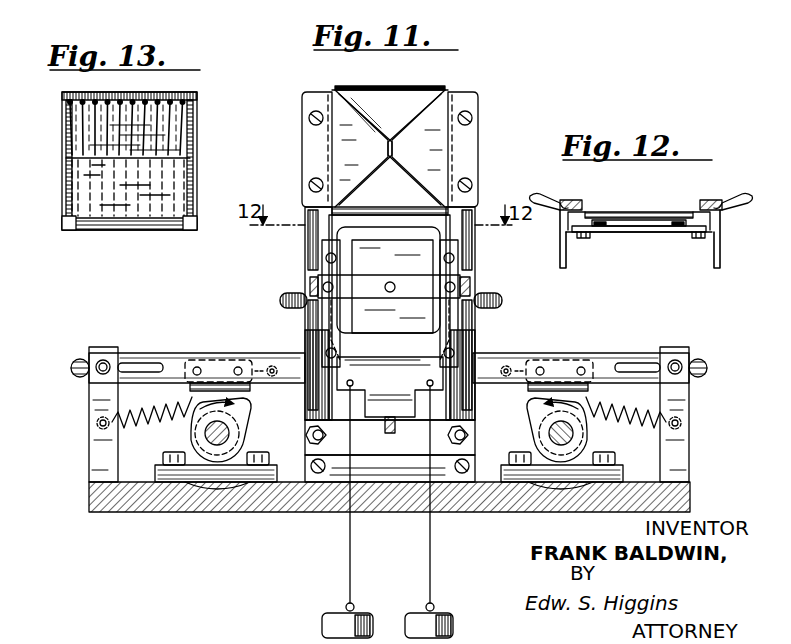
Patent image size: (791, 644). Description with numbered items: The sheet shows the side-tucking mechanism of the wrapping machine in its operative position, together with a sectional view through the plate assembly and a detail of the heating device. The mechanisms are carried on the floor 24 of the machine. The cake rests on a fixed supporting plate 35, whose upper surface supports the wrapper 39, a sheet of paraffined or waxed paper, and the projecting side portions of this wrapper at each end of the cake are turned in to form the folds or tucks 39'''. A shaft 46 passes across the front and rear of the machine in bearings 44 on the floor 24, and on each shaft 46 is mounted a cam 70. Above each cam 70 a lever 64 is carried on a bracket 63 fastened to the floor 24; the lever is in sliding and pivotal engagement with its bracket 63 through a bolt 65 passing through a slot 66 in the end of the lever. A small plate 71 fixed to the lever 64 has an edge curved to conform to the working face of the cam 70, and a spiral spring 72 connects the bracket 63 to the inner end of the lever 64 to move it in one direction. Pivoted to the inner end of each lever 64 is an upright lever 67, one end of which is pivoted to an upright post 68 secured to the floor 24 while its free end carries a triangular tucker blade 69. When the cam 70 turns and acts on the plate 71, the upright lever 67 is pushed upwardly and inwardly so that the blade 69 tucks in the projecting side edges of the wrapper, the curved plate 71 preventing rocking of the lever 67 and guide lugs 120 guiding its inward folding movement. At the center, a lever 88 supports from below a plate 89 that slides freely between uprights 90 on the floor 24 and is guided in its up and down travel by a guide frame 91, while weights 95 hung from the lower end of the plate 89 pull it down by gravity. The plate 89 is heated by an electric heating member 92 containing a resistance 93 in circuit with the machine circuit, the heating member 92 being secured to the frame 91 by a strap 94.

In FIG. 11, the floor 24 is at (298, 512).
In FIG. 11, the fixed supporting plate 35 is at (388, 212).
In FIG. 11, the wrapper 39 is at (365, 134).
In FIG. 11, the folds or tucks 39''' is at (379, 111).
In FIG. 11, the bearings 44 is at (220, 478).
In FIG. 11, the shaft 46 is at (229, 433).
In FIG. 11, the bracket 63 is at (98, 455).
In FIG. 11, the lever 64 is at (176, 362).
In FIG. 11, the bolt 65 is at (101, 361).
In FIG. 11, the slot 66 is at (72, 370).
In FIG. 12, the upright lever 67 is at (570, 205).
In FIG. 11, the upright lever 67 is at (308, 238).
In FIG. 11, the upright post 68 is at (330, 435).
In FIG. 11, the tucker blade 69 is at (314, 147).
In FIG. 11, the cam 70 is at (196, 412).
In FIG. 11, the small plate 71 is at (243, 392).
In FIG. 11, the spiral spring 72 is at (128, 421).
In FIG. 11, the lever 88 is at (394, 430).
In FIG. 12, the plate 89 is at (633, 210).
In FIG. 11, the plate 89 is at (390, 387).
In FIG. 11, the uprights 90 is at (312, 337).
In FIG. 11, the guide frame 91 is at (327, 326).
In FIG. 13, the electric heating member 92 is at (70, 190).
In FIG. 12, the electric heating member 92 is at (655, 225).
In FIG. 11, the electric heating member 92 is at (430, 268).
In FIG. 13, the resistance 93 is at (70, 133).
In FIG. 12, the strap 94 is at (619, 232).
In FIG. 11, the strap 94 is at (340, 290).
In FIG. 11, the weights 95 is at (420, 614).
In FIG. 12, the guide lugs 120 is at (538, 194).
In FIG. 11, the guide lugs 120 is at (282, 300).